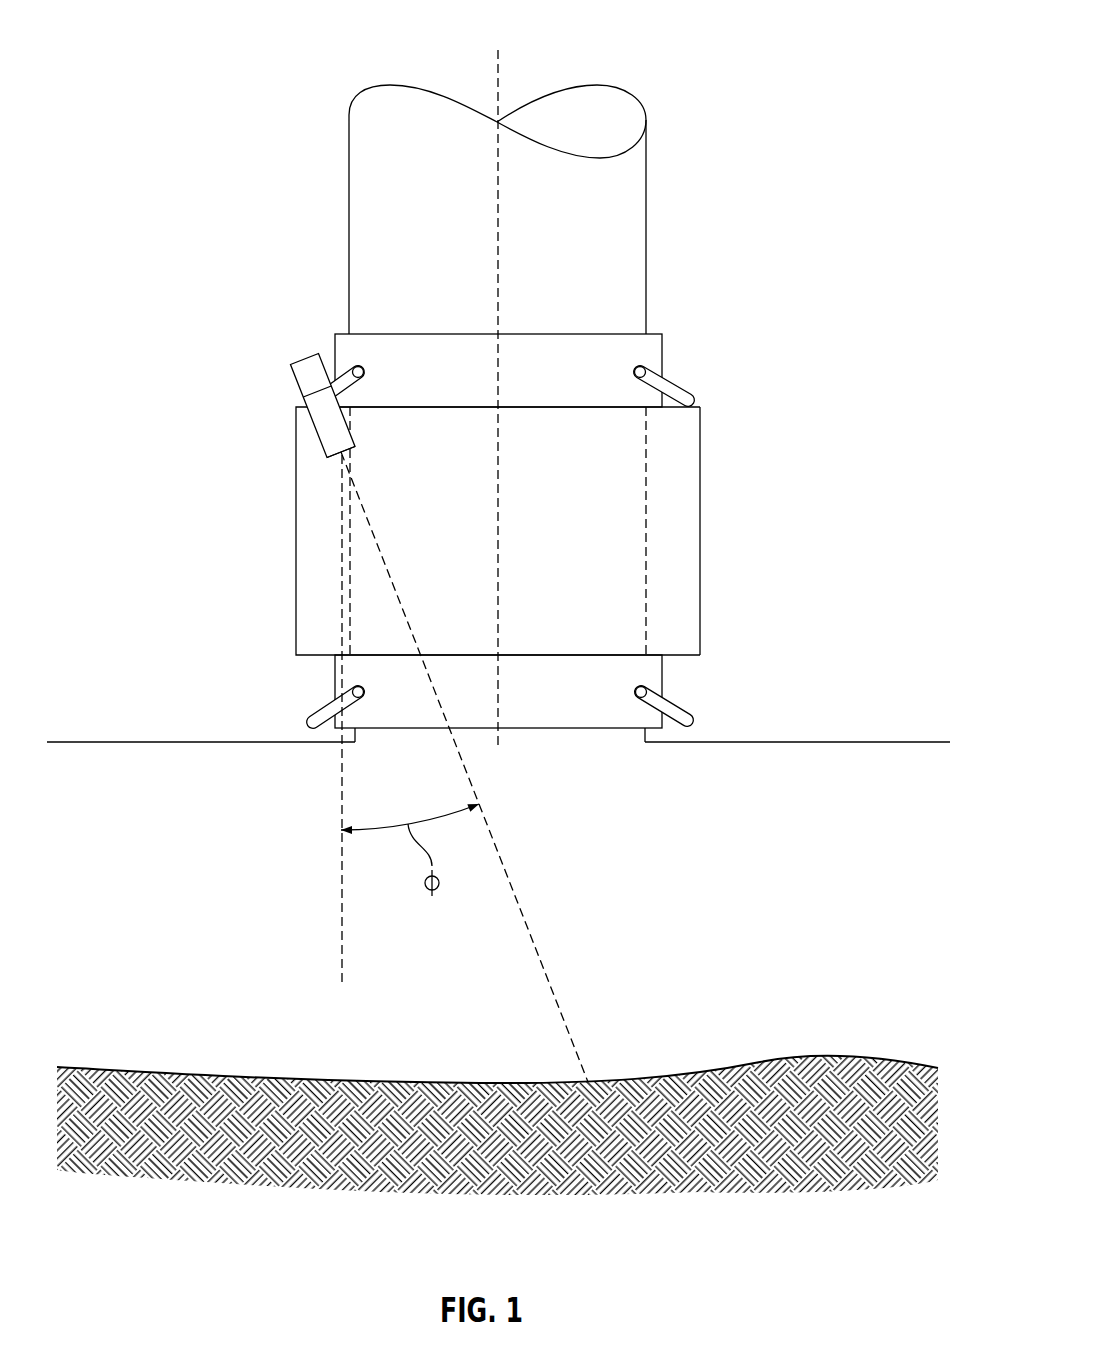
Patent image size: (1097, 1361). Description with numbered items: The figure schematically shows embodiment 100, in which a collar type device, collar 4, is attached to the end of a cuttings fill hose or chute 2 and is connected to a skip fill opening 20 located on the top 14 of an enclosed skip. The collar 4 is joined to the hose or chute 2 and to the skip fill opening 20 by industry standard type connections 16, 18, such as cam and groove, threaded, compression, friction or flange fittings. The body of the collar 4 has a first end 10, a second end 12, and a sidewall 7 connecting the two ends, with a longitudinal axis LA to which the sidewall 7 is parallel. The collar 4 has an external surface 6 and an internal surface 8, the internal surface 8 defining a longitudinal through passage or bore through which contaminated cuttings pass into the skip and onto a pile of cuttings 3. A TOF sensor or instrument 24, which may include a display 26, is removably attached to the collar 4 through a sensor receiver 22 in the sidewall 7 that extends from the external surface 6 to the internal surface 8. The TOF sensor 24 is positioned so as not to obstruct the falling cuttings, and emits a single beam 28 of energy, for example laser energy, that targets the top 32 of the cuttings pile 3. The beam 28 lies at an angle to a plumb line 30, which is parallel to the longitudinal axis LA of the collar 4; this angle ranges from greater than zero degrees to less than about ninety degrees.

The embodiment 100 is at (797, 26).
The longitudinal axis LA is at (498, 63).
The cuttings fill hose or chute 2 is at (348, 215).
The connection 16 is at (663, 353).
The external surface 6 is at (700, 483).
The collar 4 is at (702, 578).
The sidewall 7 is at (678, 545).
The internal surface 8 is at (645, 560).
The second end 12 is at (685, 657).
The skip fill opening 20 is at (643, 733).
The top of the enclosed skip 14 is at (165, 742).
The first end 10 is at (692, 398).
The connection 18 is at (663, 688).
The TOF sensor 24 is at (332, 435).
The display 26 is at (296, 370).
The sensor receiver 22 is at (325, 455).
The plumb line 30 is at (342, 882).
The beam 28 is at (497, 855).
The pile of cuttings 3 is at (243, 1183).
The top of cuttings pile 32 is at (718, 1072).